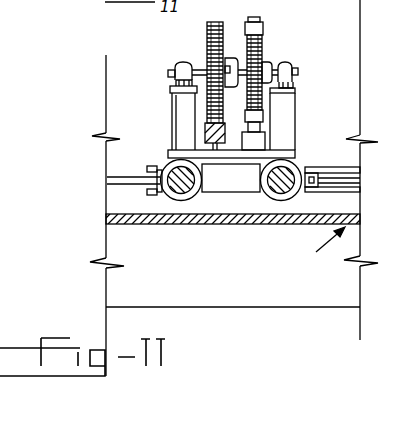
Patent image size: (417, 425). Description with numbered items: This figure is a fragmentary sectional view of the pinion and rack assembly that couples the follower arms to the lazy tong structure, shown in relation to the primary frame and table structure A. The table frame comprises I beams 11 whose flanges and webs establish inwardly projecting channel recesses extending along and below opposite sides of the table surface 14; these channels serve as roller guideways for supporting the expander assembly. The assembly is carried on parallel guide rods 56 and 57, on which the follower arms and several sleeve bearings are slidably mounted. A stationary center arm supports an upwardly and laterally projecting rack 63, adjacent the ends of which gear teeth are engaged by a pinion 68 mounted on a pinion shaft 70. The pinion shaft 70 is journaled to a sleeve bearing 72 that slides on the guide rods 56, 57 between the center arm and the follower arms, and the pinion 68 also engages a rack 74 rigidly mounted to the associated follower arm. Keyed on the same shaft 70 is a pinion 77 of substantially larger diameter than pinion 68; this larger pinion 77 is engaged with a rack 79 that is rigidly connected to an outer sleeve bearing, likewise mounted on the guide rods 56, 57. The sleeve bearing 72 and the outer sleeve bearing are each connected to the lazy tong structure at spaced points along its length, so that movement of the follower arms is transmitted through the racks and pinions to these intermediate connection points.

The I beams 11 is at (308, 299).
The table surface 14 is at (348, 215).
The guide rod 56 is at (175, 170).
The guide rod 57 is at (283, 175).
The rack 63 is at (260, 28).
The pinion 68 is at (259, 53).
The pinion shaft 70 is at (297, 72).
The sleeve bearing 72 is at (272, 197).
The rack 74 is at (262, 118).
The pinion 77 is at (208, 36).
The rack 79 is at (218, 143).
The primary frame and table structure A is at (320, 247).